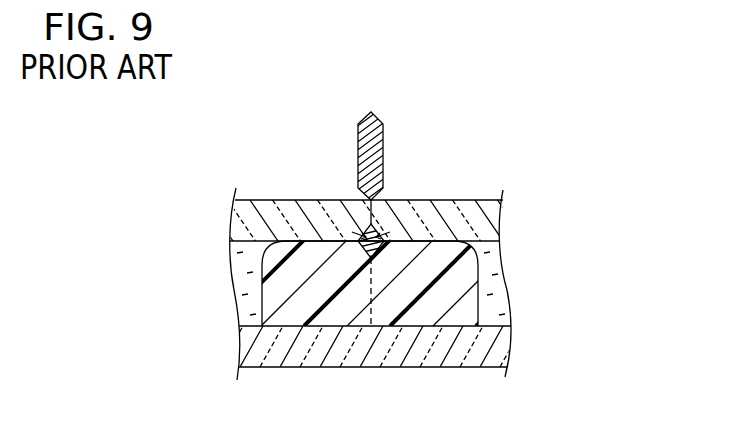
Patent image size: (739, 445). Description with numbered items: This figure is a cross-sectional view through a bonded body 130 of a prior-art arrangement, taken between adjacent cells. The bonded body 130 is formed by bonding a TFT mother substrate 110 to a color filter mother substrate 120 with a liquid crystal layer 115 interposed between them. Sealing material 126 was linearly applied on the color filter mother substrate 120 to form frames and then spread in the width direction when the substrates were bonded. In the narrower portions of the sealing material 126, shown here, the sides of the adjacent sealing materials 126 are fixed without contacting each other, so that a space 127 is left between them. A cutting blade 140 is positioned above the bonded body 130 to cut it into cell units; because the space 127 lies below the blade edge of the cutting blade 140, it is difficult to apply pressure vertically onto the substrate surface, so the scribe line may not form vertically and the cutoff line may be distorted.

The TFT mother substrate 110 is at (490, 222).
The liquid crystal layer 115 is at (416, 331).
The color filter mother substrate 120 is at (490, 347).
The sealing material 126 is at (450, 317).
The space 127 is at (372, 243).
The bonded body 130 is at (386, 270).
The cutting blade 140 is at (377, 150).